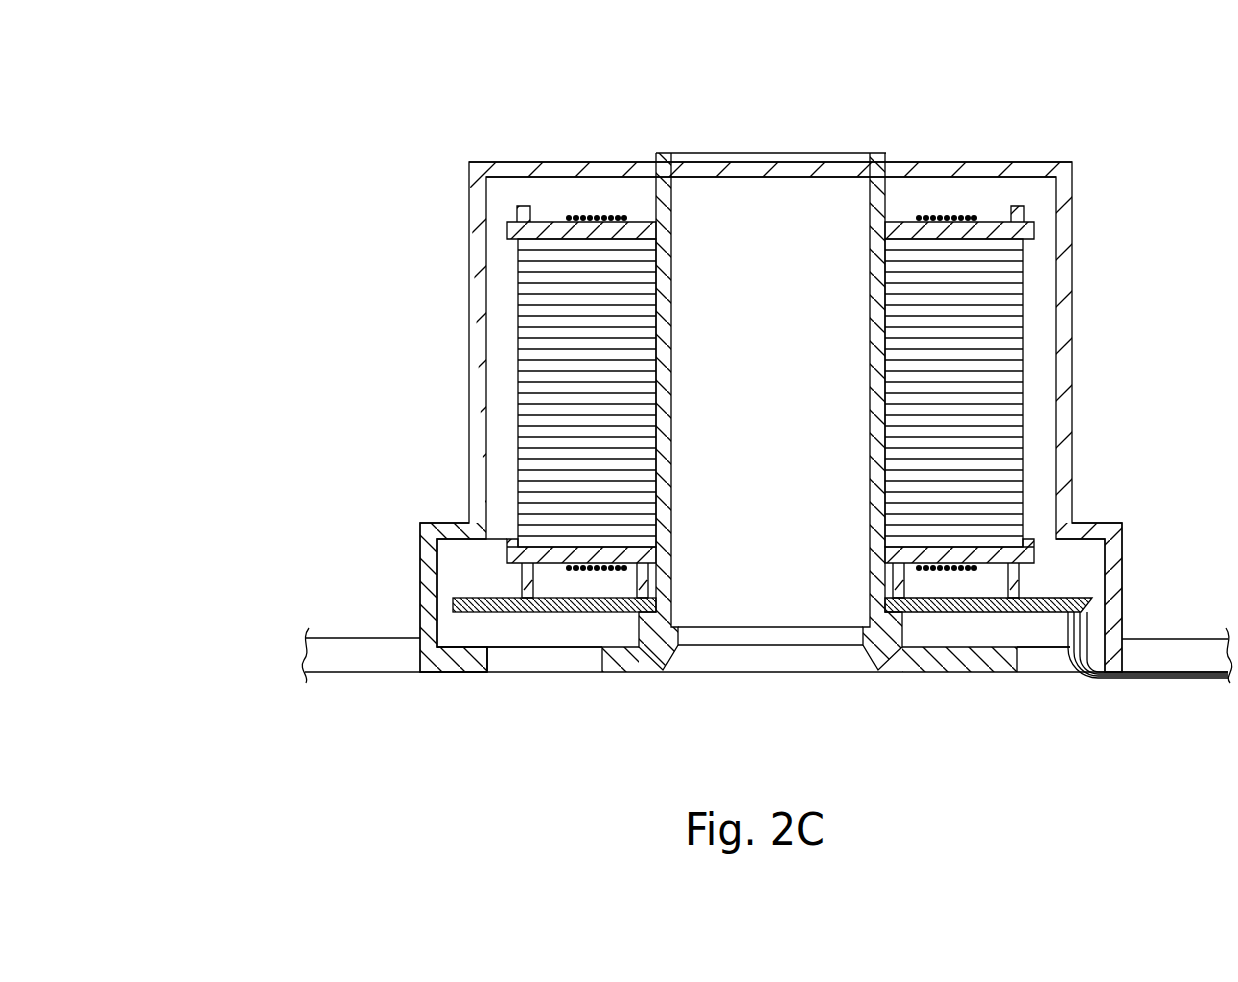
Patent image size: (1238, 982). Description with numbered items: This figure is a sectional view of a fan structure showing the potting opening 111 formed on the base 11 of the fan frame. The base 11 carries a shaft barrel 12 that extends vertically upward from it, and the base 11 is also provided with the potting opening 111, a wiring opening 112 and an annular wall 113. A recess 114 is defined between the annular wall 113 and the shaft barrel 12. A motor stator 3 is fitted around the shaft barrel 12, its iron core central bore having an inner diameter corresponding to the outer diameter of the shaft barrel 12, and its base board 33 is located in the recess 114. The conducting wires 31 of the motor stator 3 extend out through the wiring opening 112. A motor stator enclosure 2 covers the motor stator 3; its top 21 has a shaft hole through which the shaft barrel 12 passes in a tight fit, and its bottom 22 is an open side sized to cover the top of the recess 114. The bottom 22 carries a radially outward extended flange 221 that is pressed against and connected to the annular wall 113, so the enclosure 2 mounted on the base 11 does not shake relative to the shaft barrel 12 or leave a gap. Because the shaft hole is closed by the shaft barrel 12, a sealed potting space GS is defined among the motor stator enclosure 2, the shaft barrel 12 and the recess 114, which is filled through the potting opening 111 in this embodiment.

The motor stator enclosure 2 is at (513, 160).
The top 21 is at (985, 160).
The bottom 22 is at (1108, 522).
The flange 221 is at (420, 533).
The shaft barrel 12 is at (665, 153).
The motor stator 3 is at (1020, 410).
The sealed potting space GS is at (507, 362).
The annular wall 113 is at (463, 588).
The recess 114 is at (420, 560).
The base board 33 is at (1090, 607).
The base 11 is at (636, 672).
The potting opening 111 is at (520, 672).
The wiring opening 112 is at (1050, 672).
The conducting wires 31 is at (1148, 672).